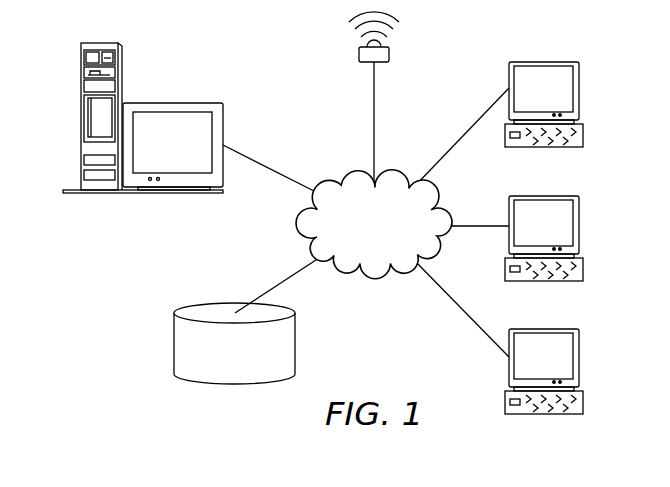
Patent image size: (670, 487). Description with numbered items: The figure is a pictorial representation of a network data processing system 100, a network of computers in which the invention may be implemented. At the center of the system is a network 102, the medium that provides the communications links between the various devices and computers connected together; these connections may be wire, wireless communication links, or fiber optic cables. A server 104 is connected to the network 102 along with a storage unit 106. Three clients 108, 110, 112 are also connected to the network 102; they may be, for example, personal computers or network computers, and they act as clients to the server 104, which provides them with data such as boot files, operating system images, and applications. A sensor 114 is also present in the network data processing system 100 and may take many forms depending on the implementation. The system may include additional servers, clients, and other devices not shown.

The network data processing system 100 is at (304, 70).
The network 102 is at (350, 178).
The server 104 is at (80, 118).
The storage unit 106 is at (174, 346).
The client 108 is at (580, 88).
The client 110 is at (580, 217).
The client 112 is at (579, 358).
The sensor 114 is at (390, 52).